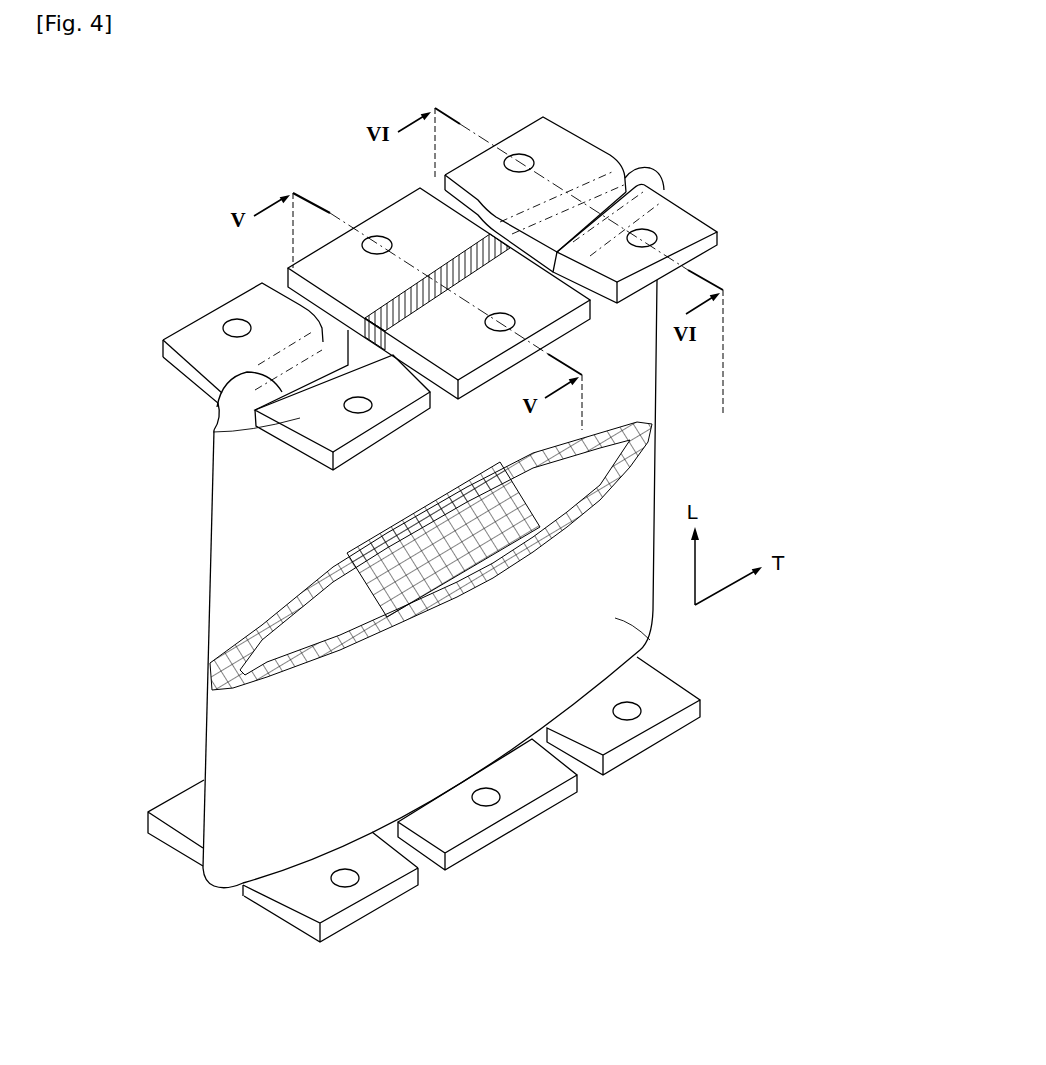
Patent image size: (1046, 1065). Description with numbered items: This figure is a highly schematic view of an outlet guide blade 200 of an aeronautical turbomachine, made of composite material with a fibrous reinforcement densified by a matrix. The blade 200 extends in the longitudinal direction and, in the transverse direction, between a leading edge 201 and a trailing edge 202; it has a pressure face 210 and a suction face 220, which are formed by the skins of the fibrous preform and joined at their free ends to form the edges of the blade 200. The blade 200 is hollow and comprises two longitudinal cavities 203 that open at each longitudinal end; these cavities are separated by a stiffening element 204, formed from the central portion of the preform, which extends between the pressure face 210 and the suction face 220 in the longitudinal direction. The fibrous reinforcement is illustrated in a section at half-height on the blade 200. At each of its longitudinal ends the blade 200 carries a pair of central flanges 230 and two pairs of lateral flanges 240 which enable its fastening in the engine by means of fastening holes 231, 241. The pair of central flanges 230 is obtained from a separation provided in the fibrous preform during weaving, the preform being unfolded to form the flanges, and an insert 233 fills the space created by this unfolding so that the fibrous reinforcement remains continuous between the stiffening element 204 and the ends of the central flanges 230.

The outlet guide blade 200 is at (383, 584).
The leading edge 201 is at (210, 635).
The trailing edge 202 is at (658, 452).
The longitudinal cavities 203 is at (584, 213).
The stiffening element 204 is at (462, 562).
The pressure face 210 is at (252, 622).
The suction face 220 is at (648, 630).
The pair of central flanges 230 is at (320, 265).
The fastening holes 231 is at (380, 237).
The insert 233 is at (446, 268).
The lateral flanges 240 is at (563, 152).
The fastening holes 241 is at (523, 152).